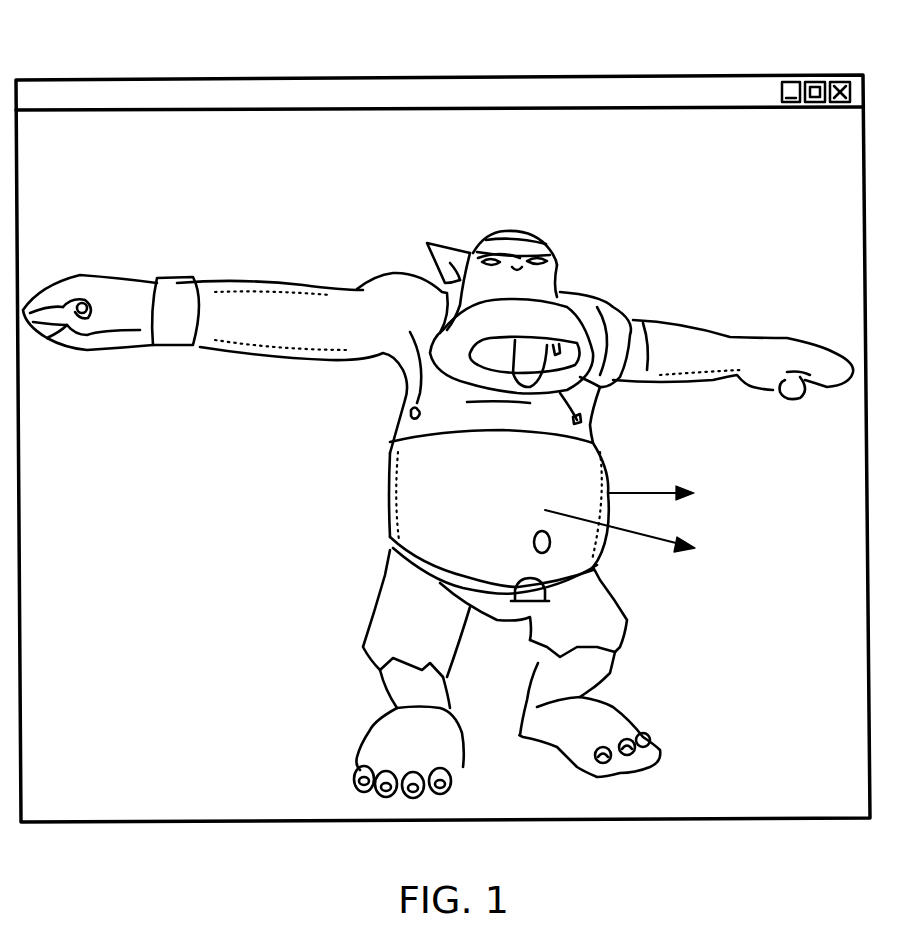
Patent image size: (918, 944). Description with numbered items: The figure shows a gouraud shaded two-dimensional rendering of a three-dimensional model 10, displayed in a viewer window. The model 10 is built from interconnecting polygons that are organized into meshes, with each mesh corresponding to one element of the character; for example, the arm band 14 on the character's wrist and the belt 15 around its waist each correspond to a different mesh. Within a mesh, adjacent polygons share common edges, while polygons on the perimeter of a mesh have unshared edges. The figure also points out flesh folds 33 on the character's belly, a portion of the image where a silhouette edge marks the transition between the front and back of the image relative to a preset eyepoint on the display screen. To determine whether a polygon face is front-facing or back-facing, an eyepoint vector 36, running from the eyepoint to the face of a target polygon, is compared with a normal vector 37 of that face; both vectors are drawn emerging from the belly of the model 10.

The 3D model 10 is at (98, 67).
The arm band 14 is at (183, 349).
The belt 15 is at (390, 517).
The flesh folds 33 is at (592, 442).
The eyepoint vector 36 is at (645, 540).
The normal vector 37 is at (652, 497).